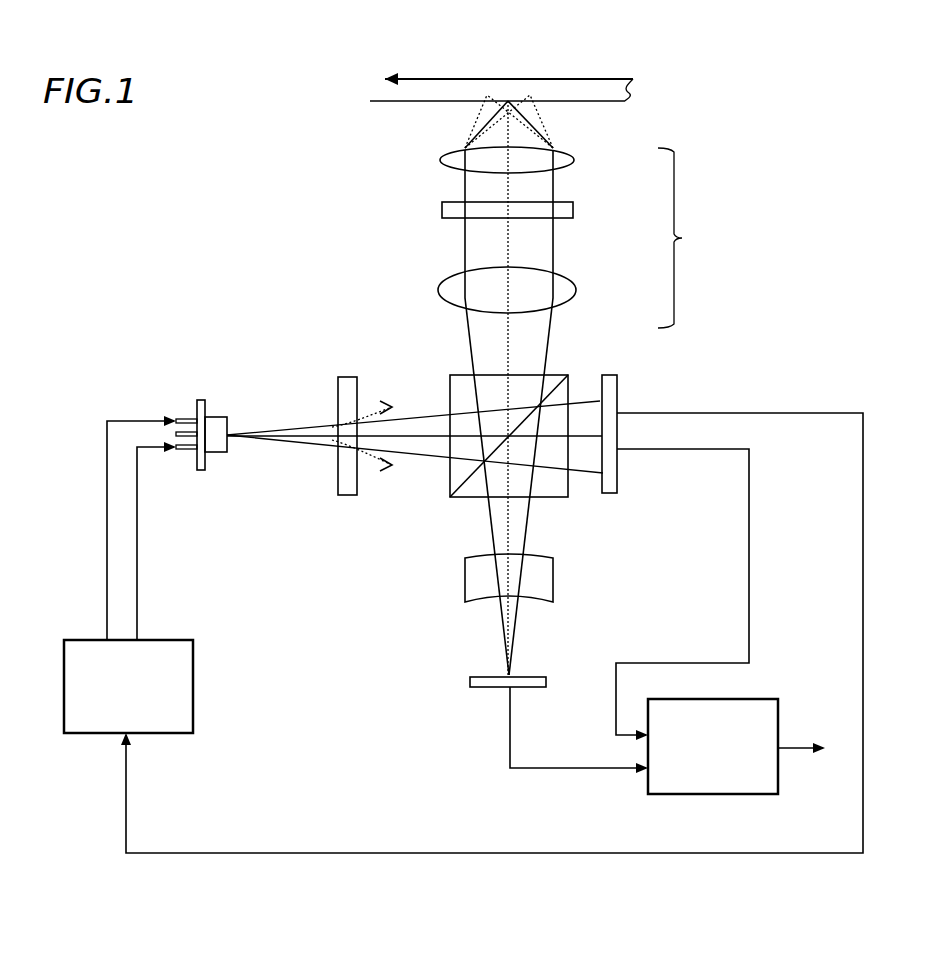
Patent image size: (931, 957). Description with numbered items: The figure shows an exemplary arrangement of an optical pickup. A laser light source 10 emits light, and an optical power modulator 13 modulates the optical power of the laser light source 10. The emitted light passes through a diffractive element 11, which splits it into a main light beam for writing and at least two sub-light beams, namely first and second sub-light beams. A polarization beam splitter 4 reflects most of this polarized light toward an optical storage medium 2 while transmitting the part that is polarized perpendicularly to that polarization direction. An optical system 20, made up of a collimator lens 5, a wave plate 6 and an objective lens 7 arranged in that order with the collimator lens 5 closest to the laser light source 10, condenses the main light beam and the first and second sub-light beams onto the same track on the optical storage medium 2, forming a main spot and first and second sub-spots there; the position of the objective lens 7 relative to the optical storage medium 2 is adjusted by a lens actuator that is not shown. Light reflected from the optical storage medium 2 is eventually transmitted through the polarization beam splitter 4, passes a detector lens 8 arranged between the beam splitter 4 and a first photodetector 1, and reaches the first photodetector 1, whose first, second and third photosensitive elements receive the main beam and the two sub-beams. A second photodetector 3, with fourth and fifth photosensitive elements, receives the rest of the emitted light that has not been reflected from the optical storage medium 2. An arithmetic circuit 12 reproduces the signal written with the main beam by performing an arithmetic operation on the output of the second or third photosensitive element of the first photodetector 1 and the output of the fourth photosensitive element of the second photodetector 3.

The first photodetector 1 is at (475, 683).
The optical storage medium 2 is at (401, 88).
The second photodetector 3 is at (610, 392).
The polarization beam splitter 4 is at (462, 407).
The collimator lens 5 is at (566, 292).
The wave plate 6 is at (565, 210).
The objective lens 7 is at (567, 166).
The detector lens 8 is at (473, 580).
The laser light source 10 is at (218, 433).
The diffractive element 11 is at (343, 398).
The arithmetic circuit 12 is at (770, 713).
The optical power modulator 13 is at (64, 662).
The optical system 20 is at (693, 238).